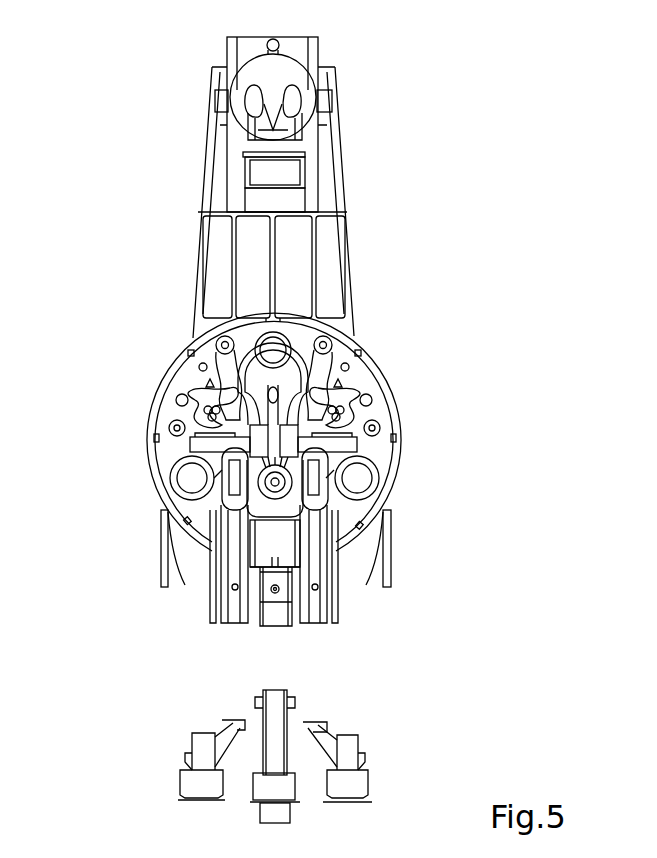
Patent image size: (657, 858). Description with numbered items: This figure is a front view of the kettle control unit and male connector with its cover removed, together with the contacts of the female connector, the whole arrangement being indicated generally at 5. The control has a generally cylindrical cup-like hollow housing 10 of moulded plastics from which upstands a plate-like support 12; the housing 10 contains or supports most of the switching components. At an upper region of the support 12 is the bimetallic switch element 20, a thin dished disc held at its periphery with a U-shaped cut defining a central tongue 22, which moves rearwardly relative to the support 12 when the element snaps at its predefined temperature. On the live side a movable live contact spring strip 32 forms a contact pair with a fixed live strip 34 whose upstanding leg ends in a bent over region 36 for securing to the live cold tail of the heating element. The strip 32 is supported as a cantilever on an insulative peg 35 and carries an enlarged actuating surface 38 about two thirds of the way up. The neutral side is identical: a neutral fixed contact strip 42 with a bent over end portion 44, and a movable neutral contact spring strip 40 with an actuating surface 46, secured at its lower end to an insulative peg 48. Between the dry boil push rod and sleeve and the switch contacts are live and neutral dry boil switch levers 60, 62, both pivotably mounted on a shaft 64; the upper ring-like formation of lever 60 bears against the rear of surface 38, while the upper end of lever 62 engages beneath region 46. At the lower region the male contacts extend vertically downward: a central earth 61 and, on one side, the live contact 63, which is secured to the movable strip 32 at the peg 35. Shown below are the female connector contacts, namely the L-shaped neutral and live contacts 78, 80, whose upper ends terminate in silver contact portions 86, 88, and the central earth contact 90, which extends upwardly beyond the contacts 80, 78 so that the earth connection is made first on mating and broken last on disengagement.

The carriage assembly 5 is at (356, 601).
The housing 10 is at (398, 392).
The support 12 is at (338, 165).
The bimetallic switch element 20 is at (293, 72).
The central tongue 22 is at (272, 90).
The movable live contact spring strip 32 is at (142, 426).
The fixed live strip 34 is at (220, 347).
The insulative peg 35 is at (163, 537).
The bent over region 36 is at (192, 447).
The actuating surface 38 is at (233, 385).
The movable neutral contact spring strip 40 is at (337, 425).
The neutral fixed contact strip 42 is at (358, 372).
The bent over end portion 44 is at (362, 448).
The actuating surface 46 is at (335, 340).
The insulative peg 48 is at (387, 522).
The live dry boil switch lever 60 is at (233, 320).
The central earth 61 is at (273, 624).
The neutral dry boil switch lever 62 is at (313, 320).
The live contact 63 is at (237, 620).
The shaft 64 is at (228, 477).
The neutral contact 78 is at (364, 766).
The live contact 80 is at (177, 771).
The contact portion 86 is at (315, 722).
The contact portion 88 is at (237, 722).
The central earth contact 90 is at (273, 695).